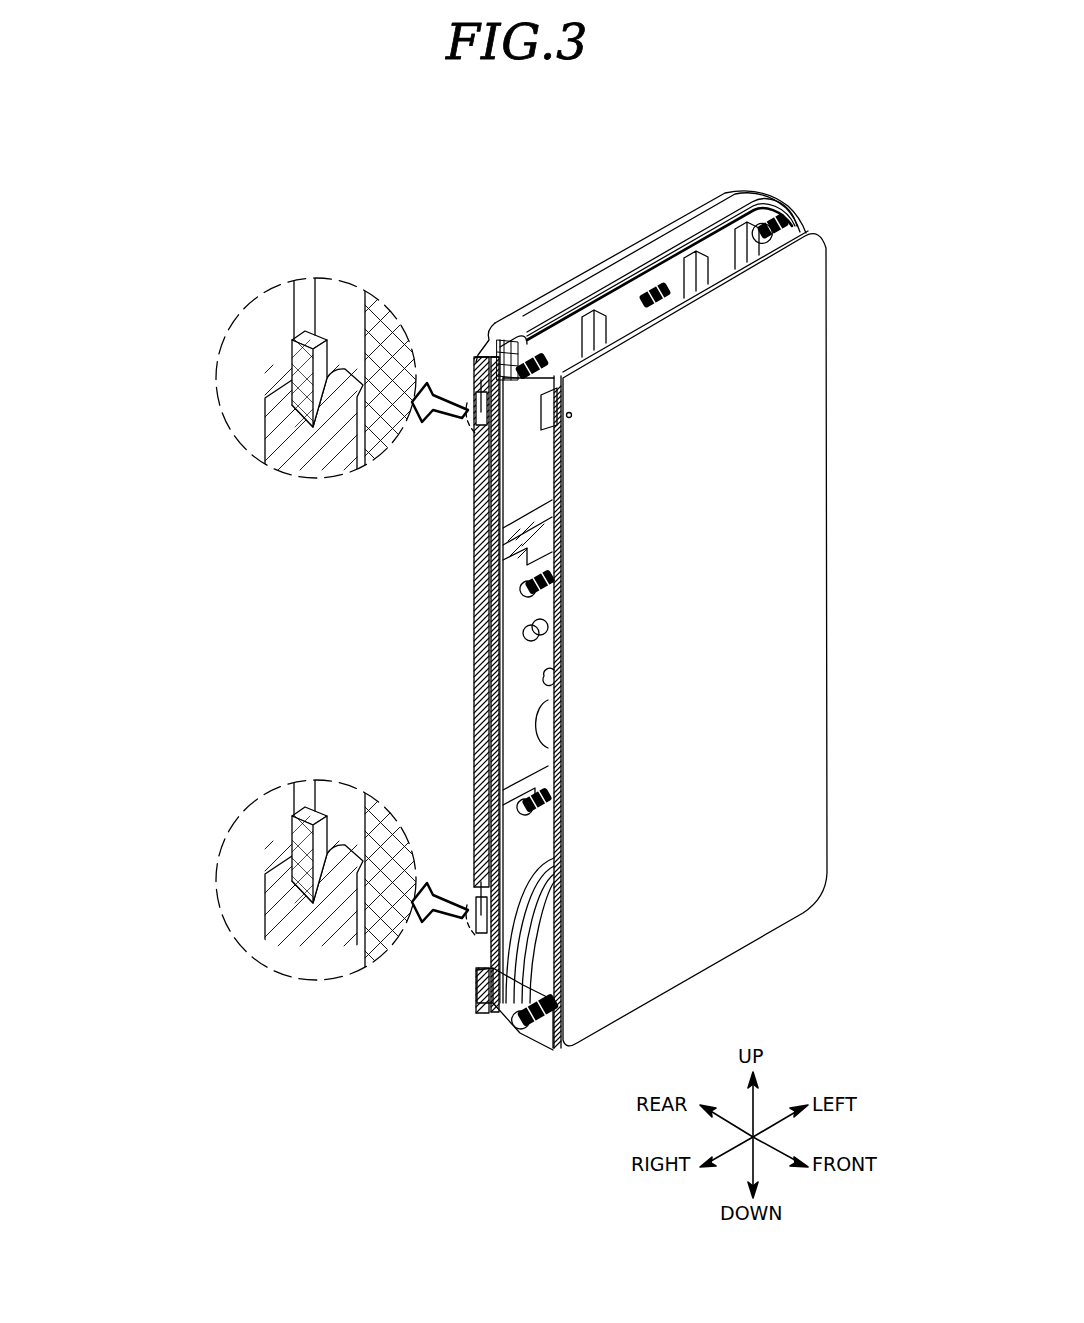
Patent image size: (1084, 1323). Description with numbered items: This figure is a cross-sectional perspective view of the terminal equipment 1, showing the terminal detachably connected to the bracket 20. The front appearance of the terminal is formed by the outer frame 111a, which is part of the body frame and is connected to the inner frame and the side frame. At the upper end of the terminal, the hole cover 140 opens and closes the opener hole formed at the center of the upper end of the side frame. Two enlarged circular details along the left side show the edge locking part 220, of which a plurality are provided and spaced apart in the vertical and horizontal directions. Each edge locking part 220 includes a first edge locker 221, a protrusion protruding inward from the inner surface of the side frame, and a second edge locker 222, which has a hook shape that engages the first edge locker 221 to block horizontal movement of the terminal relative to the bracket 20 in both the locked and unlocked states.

The terminal equipment 1 is at (600, 190).
The hole cover 140 is at (610, 262).
The outer frame 111a is at (819, 318).
The bracket 20 is at (297, 308).
The edge locking part 220 is at (160, 328).
The first edge locker 221 is at (300, 355).
The second edge locker 222 is at (285, 397).